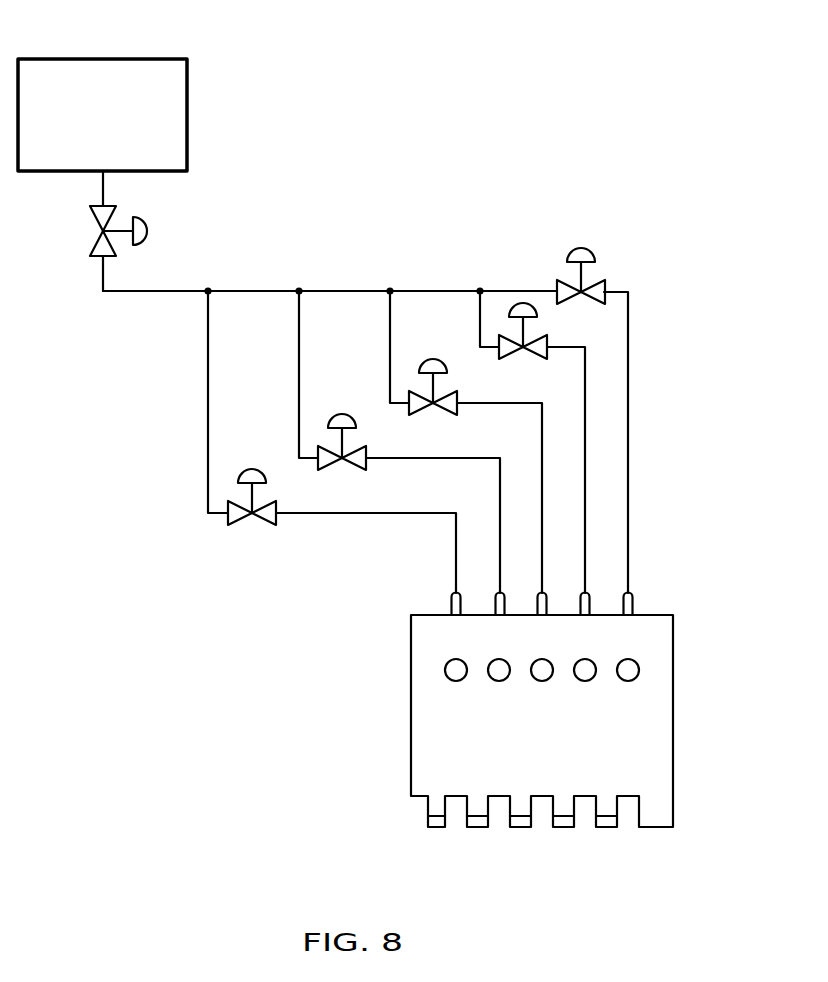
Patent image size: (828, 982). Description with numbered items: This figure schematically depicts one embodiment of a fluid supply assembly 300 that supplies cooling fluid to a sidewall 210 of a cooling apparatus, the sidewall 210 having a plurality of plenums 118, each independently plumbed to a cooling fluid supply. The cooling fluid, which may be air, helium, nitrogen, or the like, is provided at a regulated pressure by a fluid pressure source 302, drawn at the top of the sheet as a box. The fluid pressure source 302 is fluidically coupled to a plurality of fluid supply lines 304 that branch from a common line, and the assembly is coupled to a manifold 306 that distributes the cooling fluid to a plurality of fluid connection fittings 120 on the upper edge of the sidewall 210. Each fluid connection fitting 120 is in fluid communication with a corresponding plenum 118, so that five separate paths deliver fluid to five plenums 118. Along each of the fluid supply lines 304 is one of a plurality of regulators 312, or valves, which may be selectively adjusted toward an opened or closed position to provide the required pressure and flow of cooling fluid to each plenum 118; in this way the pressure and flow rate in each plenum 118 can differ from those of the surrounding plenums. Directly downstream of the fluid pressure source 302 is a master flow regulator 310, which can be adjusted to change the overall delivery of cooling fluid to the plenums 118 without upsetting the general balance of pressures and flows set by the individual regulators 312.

The fluid supply assembly 300 is at (513, 130).
The fluid pressure source 302 is at (107, 59).
The fluid supply lines 304 is at (480, 328).
The manifold 306 is at (349, 291).
The master flow regulator 310 is at (91, 246).
The regulators 312 is at (252, 525).
The fluid connection fittings 120 is at (451, 597).
The plenums 118 is at (456, 681).
The sidewall 210 is at (653, 846).